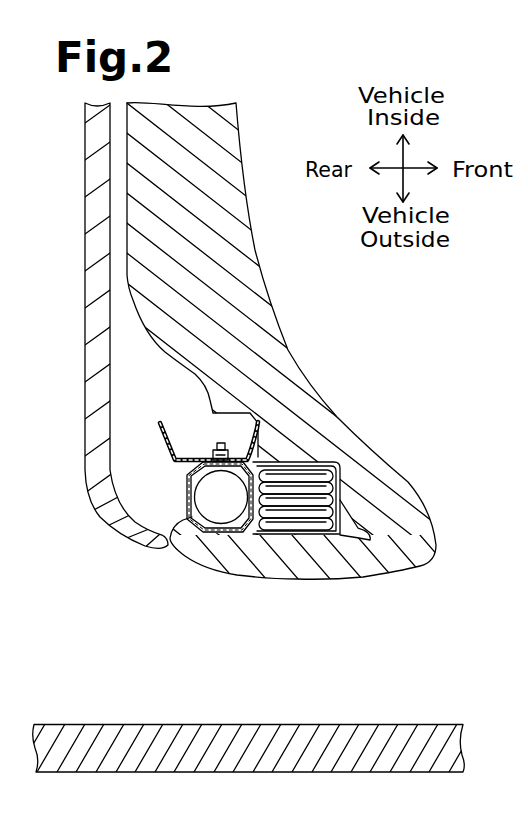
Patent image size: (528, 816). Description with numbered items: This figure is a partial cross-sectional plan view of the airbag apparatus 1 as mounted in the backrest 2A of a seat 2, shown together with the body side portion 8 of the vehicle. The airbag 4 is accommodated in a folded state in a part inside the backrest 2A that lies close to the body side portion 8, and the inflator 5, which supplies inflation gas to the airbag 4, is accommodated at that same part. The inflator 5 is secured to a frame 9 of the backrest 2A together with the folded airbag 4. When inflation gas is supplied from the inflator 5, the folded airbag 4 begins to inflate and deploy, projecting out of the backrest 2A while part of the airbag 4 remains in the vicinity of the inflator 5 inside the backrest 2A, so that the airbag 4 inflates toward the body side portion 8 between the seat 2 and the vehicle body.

The airbag apparatus 1 is at (167, 488).
The seat 2 is at (264, 408).
The backrest 2A is at (346, 318).
The airbag 4 is at (278, 528).
The inflator 5 is at (220, 518).
The body side portion 8 is at (402, 729).
The frame 9 is at (163, 443).